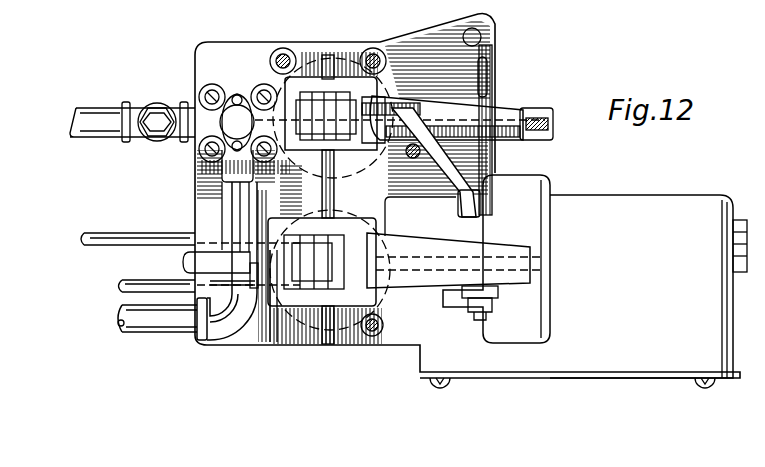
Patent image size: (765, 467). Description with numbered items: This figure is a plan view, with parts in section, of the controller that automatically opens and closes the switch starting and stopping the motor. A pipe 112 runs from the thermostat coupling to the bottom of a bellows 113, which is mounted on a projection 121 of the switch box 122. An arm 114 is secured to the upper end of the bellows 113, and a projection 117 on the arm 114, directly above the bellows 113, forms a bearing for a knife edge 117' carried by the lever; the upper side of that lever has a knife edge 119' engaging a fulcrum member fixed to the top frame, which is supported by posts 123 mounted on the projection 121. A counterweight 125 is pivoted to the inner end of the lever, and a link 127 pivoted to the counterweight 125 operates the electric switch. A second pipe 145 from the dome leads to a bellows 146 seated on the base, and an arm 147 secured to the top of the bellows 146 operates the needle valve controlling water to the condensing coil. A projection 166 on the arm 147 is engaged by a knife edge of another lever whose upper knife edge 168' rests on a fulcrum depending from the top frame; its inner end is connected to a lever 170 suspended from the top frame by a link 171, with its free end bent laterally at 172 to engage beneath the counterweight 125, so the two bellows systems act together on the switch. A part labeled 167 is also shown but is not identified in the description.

The pipe 112 is at (105, 278).
The bellows 113 is at (303, 345).
The arm 114 is at (446, 156).
The projection 117 is at (329, 270).
The knife edge 117' is at (323, 262).
The knife edge 119' is at (339, 257).
The projection 121 is at (266, 343).
The switch box 122 is at (648, 286).
The posts 123 is at (284, 48).
The counterweight 125 is at (496, 259).
The link 127 is at (465, 318).
The pipe 145 is at (152, 250).
The bellows 146 is at (328, 55).
The arm 147 is at (400, 250).
The projection 166 is at (333, 118).
The plate 167 is at (316, 128).
The knife edge 168' is at (378, 90).
The lever 170 is at (505, 110).
The link 171 is at (493, 155).
The laterally bent free end 172 is at (468, 212).